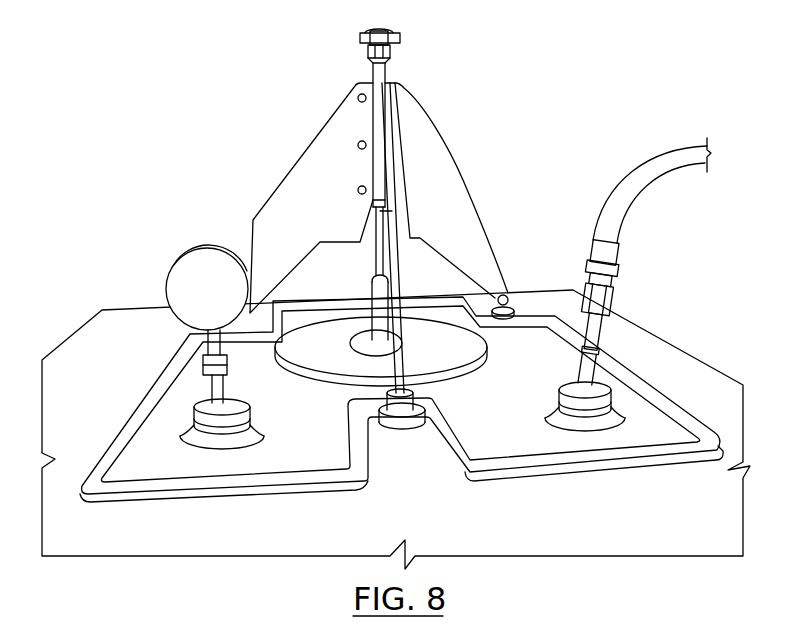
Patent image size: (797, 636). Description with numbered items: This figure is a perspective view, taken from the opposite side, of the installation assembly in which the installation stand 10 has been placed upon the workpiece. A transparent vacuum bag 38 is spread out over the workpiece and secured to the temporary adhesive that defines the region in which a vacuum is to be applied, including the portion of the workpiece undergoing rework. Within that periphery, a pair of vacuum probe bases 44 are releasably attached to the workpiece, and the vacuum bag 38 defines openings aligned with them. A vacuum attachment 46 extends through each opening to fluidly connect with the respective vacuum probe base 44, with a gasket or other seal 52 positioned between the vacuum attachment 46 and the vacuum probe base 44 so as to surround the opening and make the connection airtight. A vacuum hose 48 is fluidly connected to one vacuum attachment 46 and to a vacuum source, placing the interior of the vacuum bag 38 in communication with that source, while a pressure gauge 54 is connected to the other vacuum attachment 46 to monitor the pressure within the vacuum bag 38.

The installation stand 10 is at (447, 83).
The vacuum bag 38 is at (324, 452).
The vacuum probe base 44 is at (187, 427).
The vacuum attachment 46 is at (237, 408).
The vacuum hose 48 is at (635, 181).
The seal 52 is at (222, 434).
The pressure gauge 54 is at (197, 285).